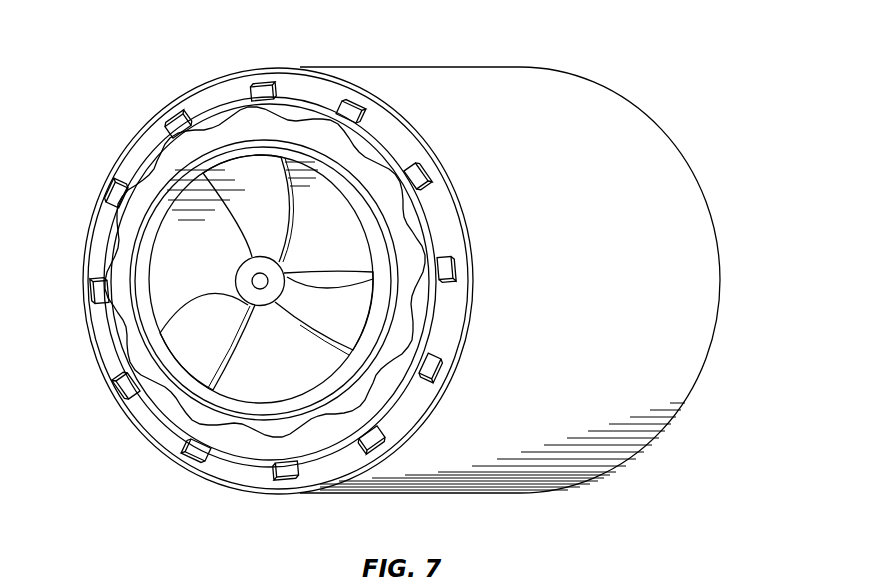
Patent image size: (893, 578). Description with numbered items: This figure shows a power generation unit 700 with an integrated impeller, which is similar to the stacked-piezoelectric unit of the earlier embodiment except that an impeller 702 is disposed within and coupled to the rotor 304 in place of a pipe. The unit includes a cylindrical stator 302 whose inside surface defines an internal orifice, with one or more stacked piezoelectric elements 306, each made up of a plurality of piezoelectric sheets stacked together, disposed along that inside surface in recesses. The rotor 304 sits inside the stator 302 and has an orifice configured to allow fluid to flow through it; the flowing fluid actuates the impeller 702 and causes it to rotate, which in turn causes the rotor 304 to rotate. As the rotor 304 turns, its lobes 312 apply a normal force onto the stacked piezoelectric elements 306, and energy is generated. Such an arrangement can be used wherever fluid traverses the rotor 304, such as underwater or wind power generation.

The power generation unit 700 is at (692, 54).
The stator 302 is at (297, 78).
The rotor 304 is at (222, 123).
The stacked piezoelectric elements 306 is at (120, 193).
The lobes 312 is at (197, 422).
The impeller 702 is at (188, 340).